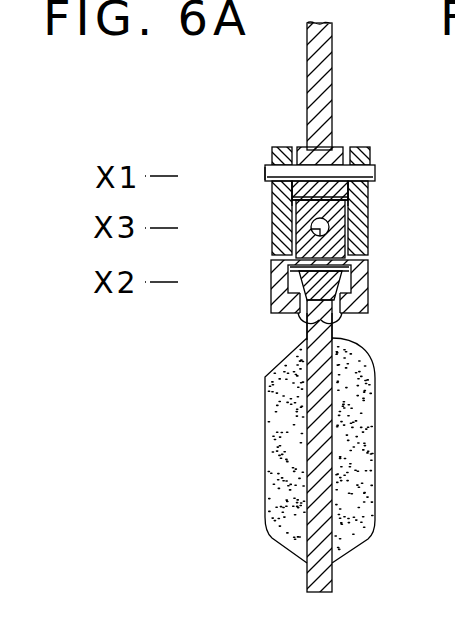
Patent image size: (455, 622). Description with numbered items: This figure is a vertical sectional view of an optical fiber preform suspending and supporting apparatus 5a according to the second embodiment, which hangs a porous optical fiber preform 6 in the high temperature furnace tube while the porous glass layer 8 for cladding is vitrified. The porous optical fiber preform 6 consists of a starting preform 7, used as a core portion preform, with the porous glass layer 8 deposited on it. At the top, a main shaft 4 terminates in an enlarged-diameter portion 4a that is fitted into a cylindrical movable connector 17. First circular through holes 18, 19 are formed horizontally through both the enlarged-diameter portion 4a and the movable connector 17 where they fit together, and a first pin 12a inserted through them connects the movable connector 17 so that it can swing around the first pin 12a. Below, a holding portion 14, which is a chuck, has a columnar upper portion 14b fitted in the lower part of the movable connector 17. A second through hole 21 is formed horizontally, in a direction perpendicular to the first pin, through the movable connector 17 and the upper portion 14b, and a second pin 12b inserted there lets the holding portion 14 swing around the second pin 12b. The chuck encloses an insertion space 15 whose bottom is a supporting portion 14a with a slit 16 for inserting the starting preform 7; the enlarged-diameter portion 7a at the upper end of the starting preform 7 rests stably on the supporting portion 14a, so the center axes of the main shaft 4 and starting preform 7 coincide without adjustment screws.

The main shaft 4 is at (328, 46).
The enlarged-diameter portion of the main shaft 4a is at (299, 148).
The first through hole 18 is at (339, 149).
The first through hole 19 is at (268, 172).
The first pin 12a is at (383, 165).
The second pin 12b is at (291, 207).
The upper portion of the holding portion 14b is at (372, 208).
The movable connector 17 is at (362, 222).
The second through hole 21 is at (311, 230).
The optical fiber preform suspending and supporting apparatus 5a is at (258, 251).
The insertion space 15 is at (350, 283).
The enlarged-diameter portion of the starting preform 7a is at (288, 288).
The holding portion 14 is at (366, 297).
The supporting portion 14a is at (300, 316).
The slit 16 is at (306, 330).
The starting preform 7 is at (326, 393).
The porous glass layer 8 is at (352, 474).
The porous optical fiber preform 6 is at (313, 446).